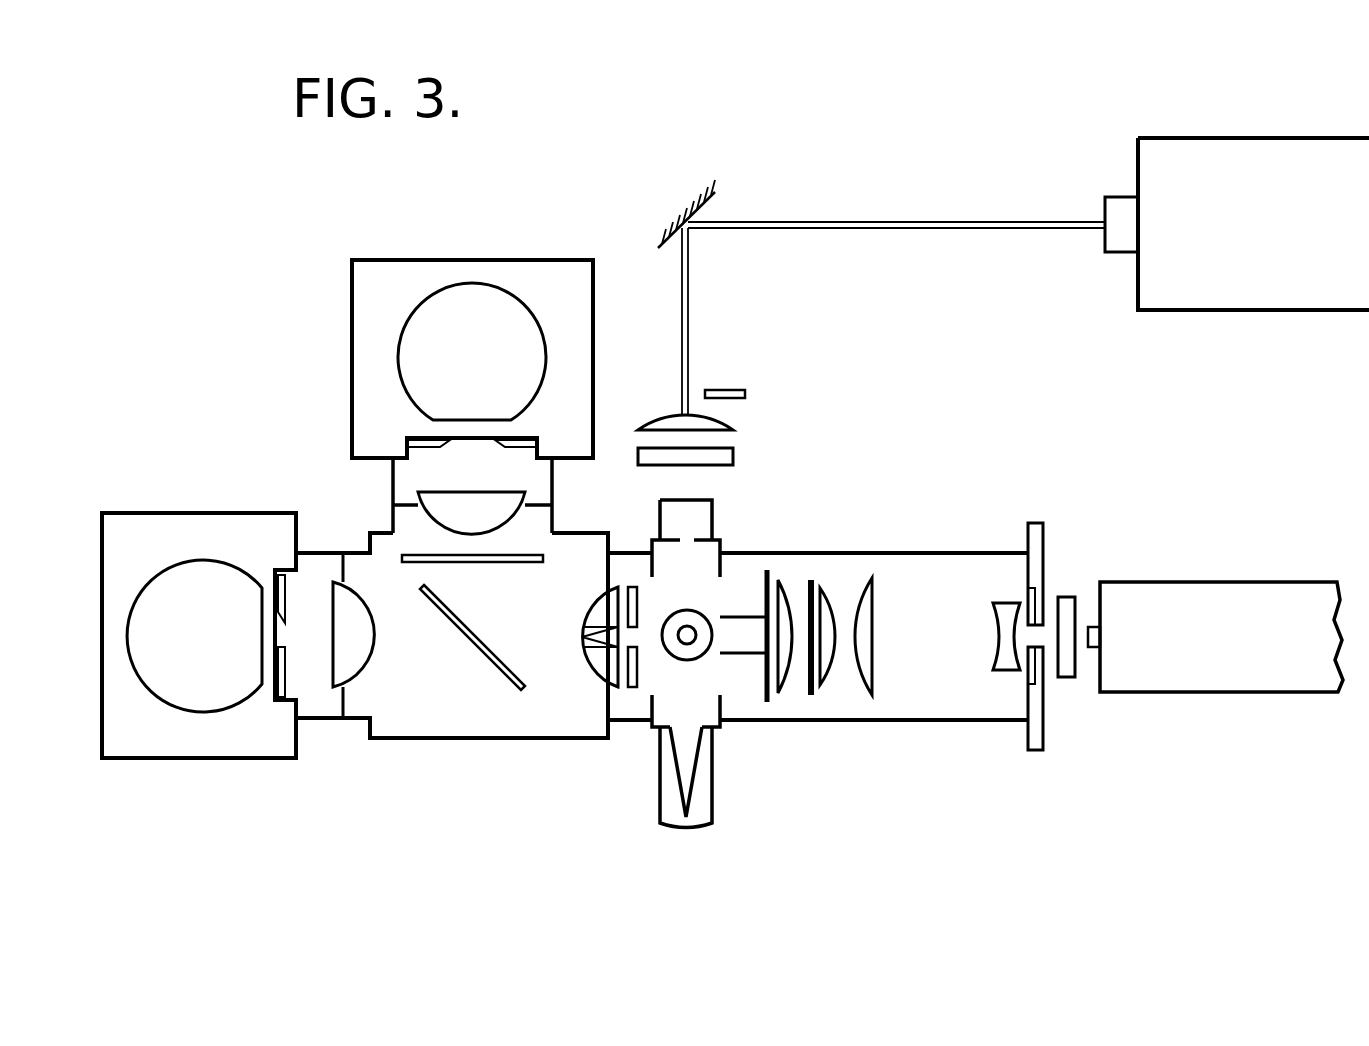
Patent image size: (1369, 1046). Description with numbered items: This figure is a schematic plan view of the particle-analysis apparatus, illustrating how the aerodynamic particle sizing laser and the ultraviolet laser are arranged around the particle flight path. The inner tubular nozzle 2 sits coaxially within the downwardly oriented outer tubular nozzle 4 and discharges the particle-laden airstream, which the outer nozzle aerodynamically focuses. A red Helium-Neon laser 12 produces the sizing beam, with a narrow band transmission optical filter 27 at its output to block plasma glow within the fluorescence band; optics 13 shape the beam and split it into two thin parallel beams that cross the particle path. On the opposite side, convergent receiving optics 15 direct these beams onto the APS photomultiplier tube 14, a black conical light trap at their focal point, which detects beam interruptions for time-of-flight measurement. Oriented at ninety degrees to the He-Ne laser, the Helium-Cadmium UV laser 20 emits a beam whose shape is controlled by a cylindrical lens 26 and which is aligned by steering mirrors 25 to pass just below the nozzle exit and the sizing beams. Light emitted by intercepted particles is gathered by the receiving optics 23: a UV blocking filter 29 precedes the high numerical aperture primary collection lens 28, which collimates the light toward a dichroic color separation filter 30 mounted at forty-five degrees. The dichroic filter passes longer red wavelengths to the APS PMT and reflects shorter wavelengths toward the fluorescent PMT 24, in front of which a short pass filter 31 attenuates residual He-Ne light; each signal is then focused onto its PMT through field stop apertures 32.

The inner tubular nozzle 2 is at (708, 618).
The outer tubular nozzle 4 is at (697, 627).
The Helium-Neon laser 12 is at (1210, 600).
The optics 13 is at (1027, 747).
The APS photomultiplier tube 14 is at (182, 697).
The convergent receiving optics 15 is at (358, 768).
The Helium-Cadmium laser 20 is at (1192, 148).
The receiving optics 23 is at (335, 405).
The fluorescent PMT 24 is at (405, 345).
The steering mirrors 25 is at (668, 222).
The cylindrical lens 26 is at (760, 370).
The narrow band transmission optical filter 27 is at (1072, 597).
The primary collection lens 28 is at (600, 666).
The UV blocking filter 29 is at (632, 690).
The dichroic color separation filter 30 is at (493, 670).
The optical short pass filter 31 is at (522, 553).
The field stop apertures 32 is at (428, 436).